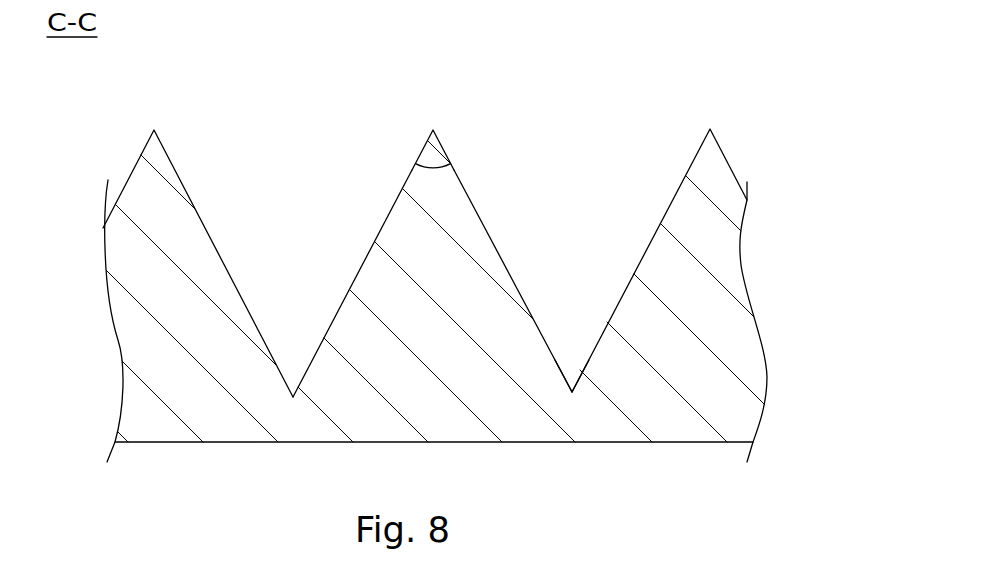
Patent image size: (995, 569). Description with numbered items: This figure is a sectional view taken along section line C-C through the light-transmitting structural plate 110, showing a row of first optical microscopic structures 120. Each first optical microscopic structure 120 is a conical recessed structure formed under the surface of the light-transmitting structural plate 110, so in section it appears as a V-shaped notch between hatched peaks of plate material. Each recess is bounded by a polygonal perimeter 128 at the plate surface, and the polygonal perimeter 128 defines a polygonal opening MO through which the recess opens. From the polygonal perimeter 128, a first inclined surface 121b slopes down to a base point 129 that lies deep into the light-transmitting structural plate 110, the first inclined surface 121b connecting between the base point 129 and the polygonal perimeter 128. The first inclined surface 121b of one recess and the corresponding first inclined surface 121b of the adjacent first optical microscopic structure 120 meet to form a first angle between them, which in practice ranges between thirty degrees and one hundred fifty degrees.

The light-transmitting structural plate 110 is at (732, 332).
The first optical microscopic structure 120 is at (183, 180).
The first inclined surface 121b is at (367, 257).
The polygonal perimeter 128 is at (433, 130).
The base point 129 is at (572, 392).
The polygonal opening MO is at (603, 131).